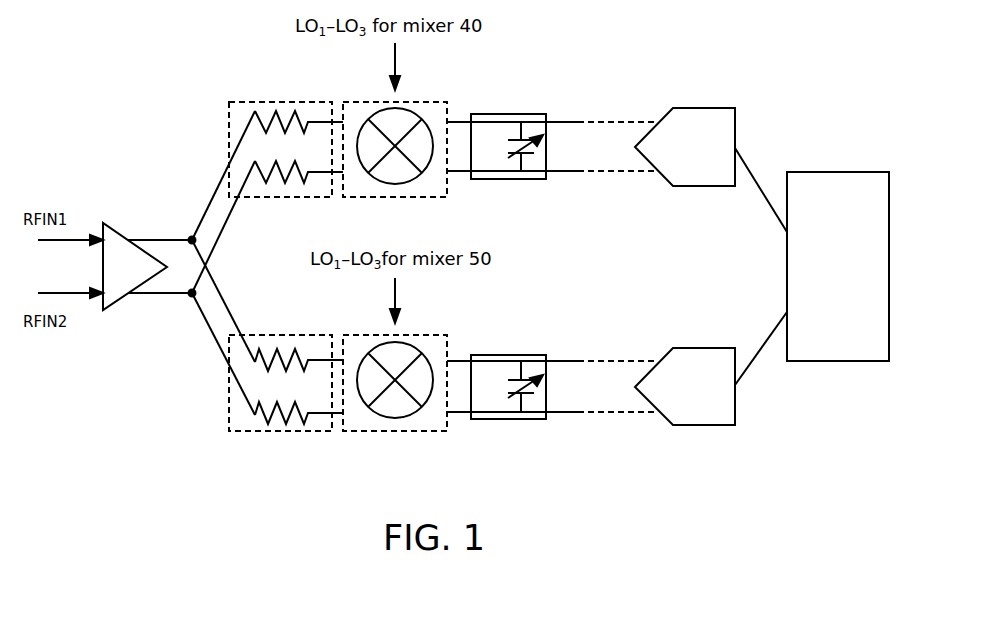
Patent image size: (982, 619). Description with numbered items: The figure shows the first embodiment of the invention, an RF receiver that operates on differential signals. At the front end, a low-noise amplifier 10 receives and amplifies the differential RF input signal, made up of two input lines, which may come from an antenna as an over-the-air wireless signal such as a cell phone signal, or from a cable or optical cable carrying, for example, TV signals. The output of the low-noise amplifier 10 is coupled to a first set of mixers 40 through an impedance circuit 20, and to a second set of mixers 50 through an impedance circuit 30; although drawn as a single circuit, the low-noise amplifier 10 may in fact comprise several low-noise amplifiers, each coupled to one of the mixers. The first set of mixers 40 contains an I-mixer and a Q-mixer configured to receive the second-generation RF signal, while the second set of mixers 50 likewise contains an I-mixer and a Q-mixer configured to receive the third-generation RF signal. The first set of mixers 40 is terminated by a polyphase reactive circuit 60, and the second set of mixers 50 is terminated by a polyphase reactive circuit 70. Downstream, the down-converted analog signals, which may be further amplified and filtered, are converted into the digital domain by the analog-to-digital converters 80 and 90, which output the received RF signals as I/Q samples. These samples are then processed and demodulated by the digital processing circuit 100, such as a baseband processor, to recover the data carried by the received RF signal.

The low-noise amplifier 10 is at (135, 277).
The impedance circuit 20 is at (286, 137).
The impedance circuit 30 is at (286, 374).
The first set of mixers 40 is at (403, 137).
The second set of mixers 50 is at (395, 374).
The polyphase reactive circuit 60 is at (510, 128).
The polyphase reactive circuit 70 is at (508, 368).
The analog-to-digital converter 80 is at (685, 134).
The analog-to-digital converter 90 is at (685, 371).
The digital processing circuit 100 is at (838, 266).